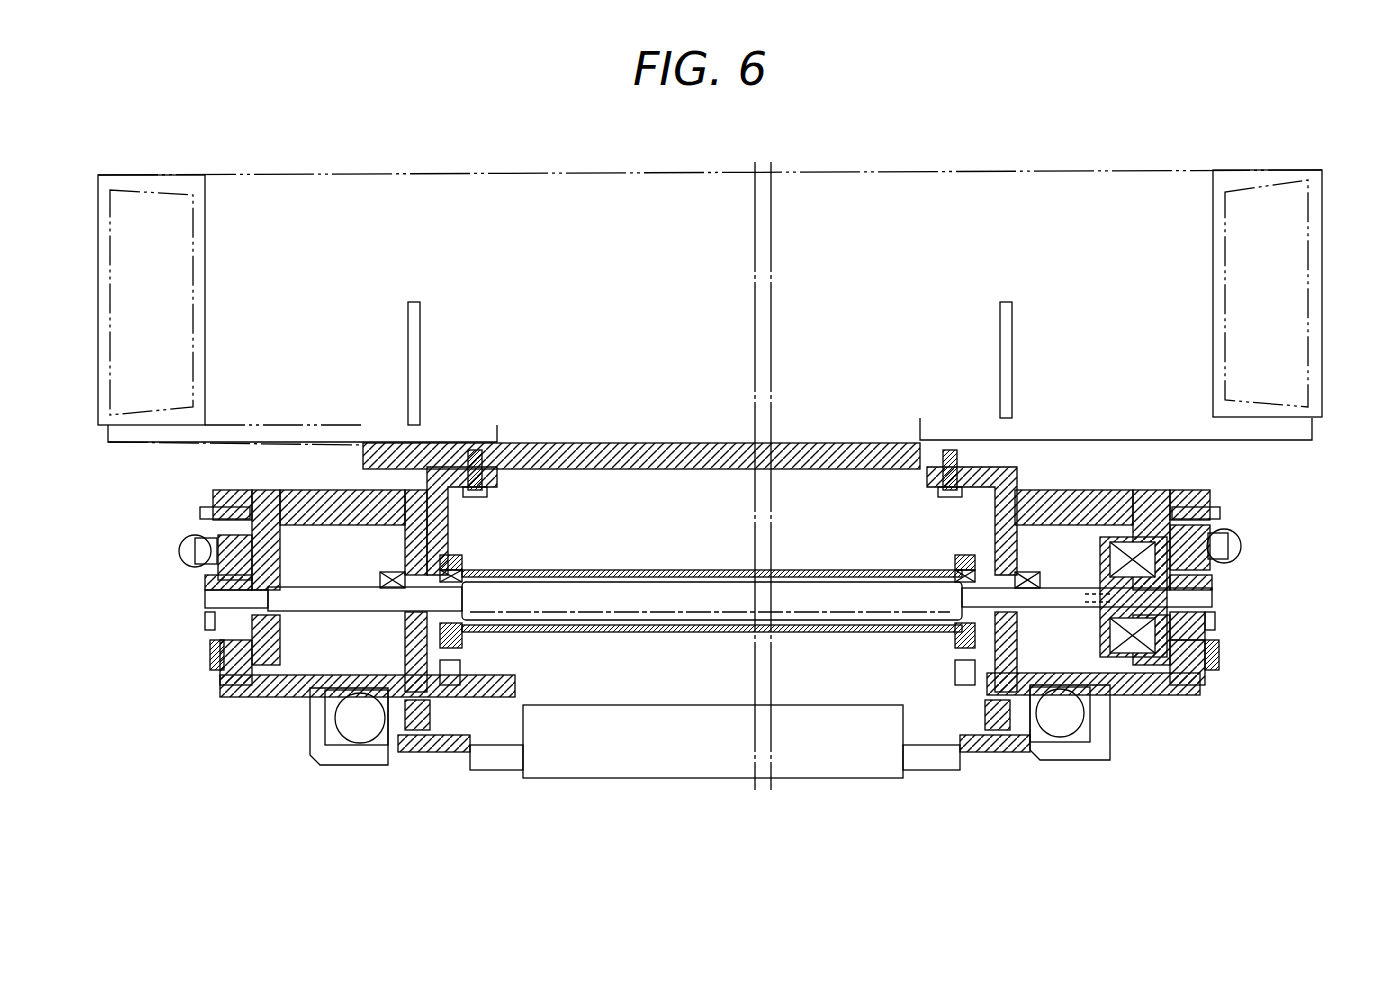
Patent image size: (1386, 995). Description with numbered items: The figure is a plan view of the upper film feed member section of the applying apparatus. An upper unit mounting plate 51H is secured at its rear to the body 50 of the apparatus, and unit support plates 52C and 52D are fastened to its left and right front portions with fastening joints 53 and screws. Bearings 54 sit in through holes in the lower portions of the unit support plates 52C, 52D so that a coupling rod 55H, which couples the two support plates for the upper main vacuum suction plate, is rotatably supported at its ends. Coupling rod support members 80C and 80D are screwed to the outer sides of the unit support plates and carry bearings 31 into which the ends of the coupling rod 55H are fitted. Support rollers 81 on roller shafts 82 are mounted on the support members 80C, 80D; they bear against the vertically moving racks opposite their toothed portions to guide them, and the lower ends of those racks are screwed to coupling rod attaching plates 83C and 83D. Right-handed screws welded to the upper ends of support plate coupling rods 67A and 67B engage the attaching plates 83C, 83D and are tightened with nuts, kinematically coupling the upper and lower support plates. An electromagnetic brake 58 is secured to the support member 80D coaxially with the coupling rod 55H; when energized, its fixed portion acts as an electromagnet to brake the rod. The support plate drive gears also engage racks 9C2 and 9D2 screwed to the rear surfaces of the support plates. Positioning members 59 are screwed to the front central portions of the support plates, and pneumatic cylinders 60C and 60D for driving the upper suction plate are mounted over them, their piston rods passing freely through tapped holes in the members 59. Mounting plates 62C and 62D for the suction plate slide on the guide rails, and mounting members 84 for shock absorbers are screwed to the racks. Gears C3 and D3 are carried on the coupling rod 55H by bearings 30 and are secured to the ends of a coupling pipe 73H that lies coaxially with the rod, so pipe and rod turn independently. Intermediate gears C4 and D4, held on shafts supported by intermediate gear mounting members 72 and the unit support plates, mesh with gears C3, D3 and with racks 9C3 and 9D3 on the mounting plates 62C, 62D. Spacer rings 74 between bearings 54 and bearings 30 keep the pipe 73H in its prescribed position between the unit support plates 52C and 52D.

The body 50 is at (157, 177).
The upper unit mounting plate 51H is at (700, 444).
The unit support plate 52C is at (425, 470).
The unit support plate 52D is at (1005, 468).
The fastening joint 53 is at (470, 450).
The electromagnetic brake 58 is at (1115, 537).
The coupling rod support member 80C is at (260, 492).
The coupling rod support member 80D is at (1145, 490).
The support roller 81 is at (243, 490).
The roller shaft 82 is at (203, 512).
The support plate coupling rod 67A is at (217, 547).
The support plate coupling rod 67B is at (1215, 528).
The coupling rod attaching plate 83C is at (180, 553).
The coupling rod attaching plate 83D is at (1243, 543).
The mounting member 84 is at (210, 653).
The rack 9C2 is at (218, 683).
The rack 9D2 is at (1200, 675).
The pneumatic cylinder 60C is at (352, 758).
The pneumatic cylinder 60D is at (1080, 750).
The positioning member 59 is at (355, 752).
The mounting plate 62C is at (445, 765).
The mounting plate 62D is at (1005, 752).
The bearing 31 is at (267, 522).
The bearing 54 is at (402, 574).
The spacer ring 74 is at (445, 555).
The gear C3 is at (460, 565).
The gear D3 is at (960, 565).
The bearing 30 is at (485, 588).
The intermediate gear mounting member 72 is at (462, 645).
The intermediate gear C4 is at (470, 680).
The intermediate gear D4 is at (955, 675).
The rack 9C3 is at (523, 743).
The rack 9D3 is at (957, 760).
The main vacuum suction plate coupling pipe 73H is at (740, 570).
The coupling rod 55H is at (770, 626).